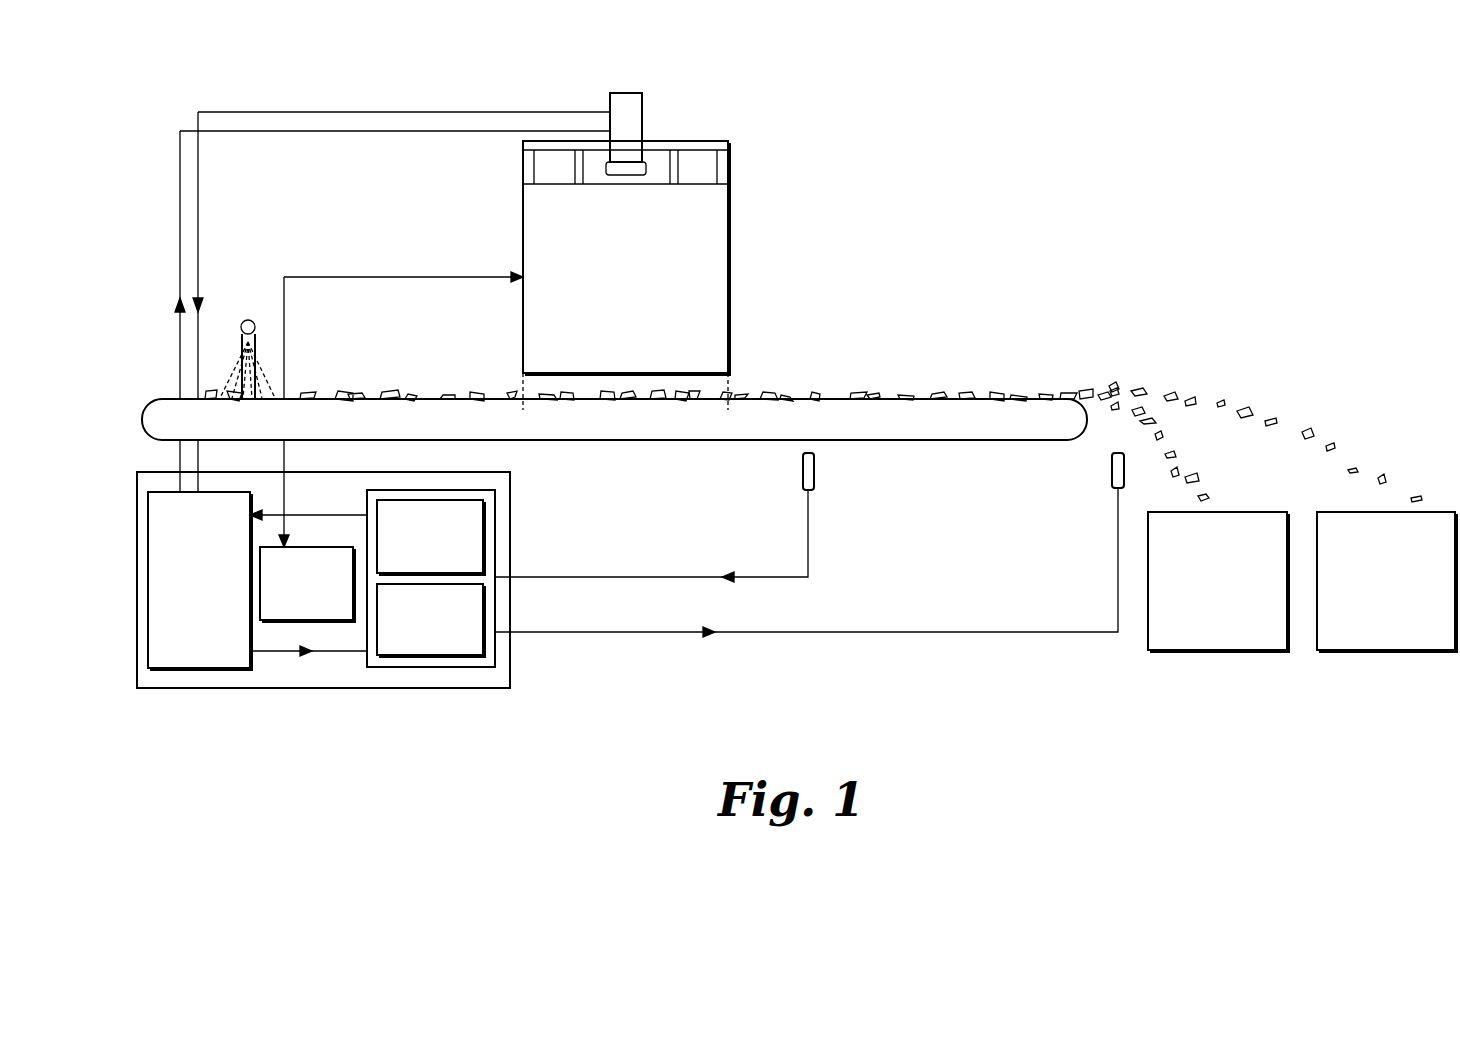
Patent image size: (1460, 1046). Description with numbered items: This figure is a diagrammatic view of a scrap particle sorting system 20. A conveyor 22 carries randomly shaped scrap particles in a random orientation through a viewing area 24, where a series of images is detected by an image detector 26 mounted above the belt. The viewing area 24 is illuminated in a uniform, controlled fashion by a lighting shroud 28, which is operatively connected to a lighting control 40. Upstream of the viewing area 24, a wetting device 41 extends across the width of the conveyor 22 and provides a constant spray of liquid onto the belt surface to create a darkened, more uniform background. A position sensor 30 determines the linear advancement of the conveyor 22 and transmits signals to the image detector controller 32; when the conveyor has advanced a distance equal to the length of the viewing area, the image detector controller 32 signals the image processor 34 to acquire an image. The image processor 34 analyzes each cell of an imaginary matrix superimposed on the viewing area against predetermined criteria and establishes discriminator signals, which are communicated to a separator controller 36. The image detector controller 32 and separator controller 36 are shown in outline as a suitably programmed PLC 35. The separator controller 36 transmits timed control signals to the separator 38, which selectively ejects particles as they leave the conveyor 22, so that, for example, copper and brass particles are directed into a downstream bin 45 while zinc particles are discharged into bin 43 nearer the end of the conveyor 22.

The scrap particle sorting system 20 is at (862, 130).
The conveyor 22 is at (917, 398).
The viewing area 24 is at (742, 385).
The image detector 26 is at (634, 116).
The lighting shroud 28 is at (728, 206).
The position sensor 30 is at (814, 470).
The image detector controller 32 is at (483, 510).
The image processor 34 is at (240, 656).
The PLC 35 is at (495, 543).
The separator controller 36 is at (412, 650).
The separator 38 is at (1112, 462).
The lighting control 40 is at (338, 610).
The wetting device 41 is at (247, 320).
The bin 43 is at (1188, 643).
The downstream bin 45 is at (1362, 643).